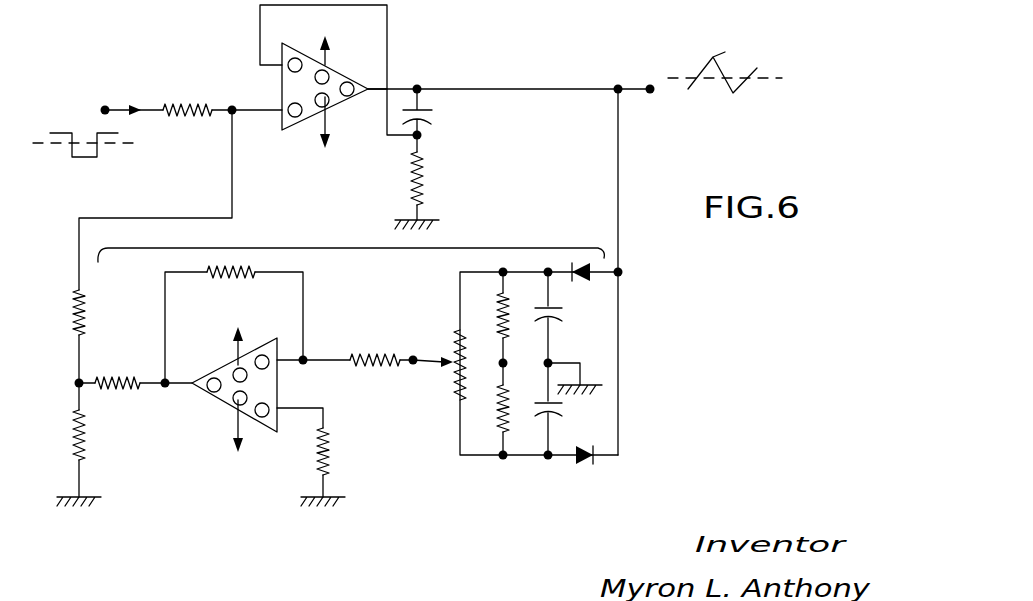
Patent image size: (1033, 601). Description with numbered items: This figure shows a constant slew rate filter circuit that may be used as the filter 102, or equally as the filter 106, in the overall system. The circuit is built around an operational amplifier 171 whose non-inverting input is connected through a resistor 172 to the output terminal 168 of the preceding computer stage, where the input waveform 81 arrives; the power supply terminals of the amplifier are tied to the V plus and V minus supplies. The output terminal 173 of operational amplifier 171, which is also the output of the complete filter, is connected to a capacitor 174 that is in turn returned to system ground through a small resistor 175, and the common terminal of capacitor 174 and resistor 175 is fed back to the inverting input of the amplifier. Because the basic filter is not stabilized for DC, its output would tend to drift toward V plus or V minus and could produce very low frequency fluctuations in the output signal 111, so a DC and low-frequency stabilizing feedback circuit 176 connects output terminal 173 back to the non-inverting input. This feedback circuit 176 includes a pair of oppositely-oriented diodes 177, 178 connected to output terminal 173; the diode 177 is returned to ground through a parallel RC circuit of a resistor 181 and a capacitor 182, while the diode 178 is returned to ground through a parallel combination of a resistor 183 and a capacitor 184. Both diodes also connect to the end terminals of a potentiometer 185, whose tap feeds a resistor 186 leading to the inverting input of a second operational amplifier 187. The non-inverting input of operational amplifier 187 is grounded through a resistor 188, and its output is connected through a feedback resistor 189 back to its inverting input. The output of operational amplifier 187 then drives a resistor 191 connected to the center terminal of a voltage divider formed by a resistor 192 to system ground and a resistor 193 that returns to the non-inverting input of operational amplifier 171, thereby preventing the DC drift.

The output terminal 168 is at (105, 106).
The resistor 172 is at (200, 103).
The input square wave signal 81 is at (89, 158).
The operational amplifier 171 is at (302, 126).
The capacitor 174 is at (428, 118).
The resistor 175 is at (428, 190).
The output terminal 173 is at (648, 83).
The output signal 111 is at (728, 58).
The feedback circuit 176 is at (268, 246).
The filter 102 is at (374, 432).
The filter 106 is at (392, 591).
The resistor 193 is at (86, 302).
The resistor 191 is at (137, 392).
The resistor 192 is at (84, 435).
The feedback resistor 189 is at (226, 280).
The operational amplifier 187 is at (266, 434).
The resistor 188 is at (333, 450).
The resistor 186 is at (362, 352).
The potentiometer 185 is at (455, 333).
The resistor 181 is at (498, 306).
The resistor 183 is at (498, 419).
The capacitor 182 is at (562, 316).
The capacitor 184 is at (538, 406).
The diode 177 is at (584, 277).
The diode 178 is at (586, 444).